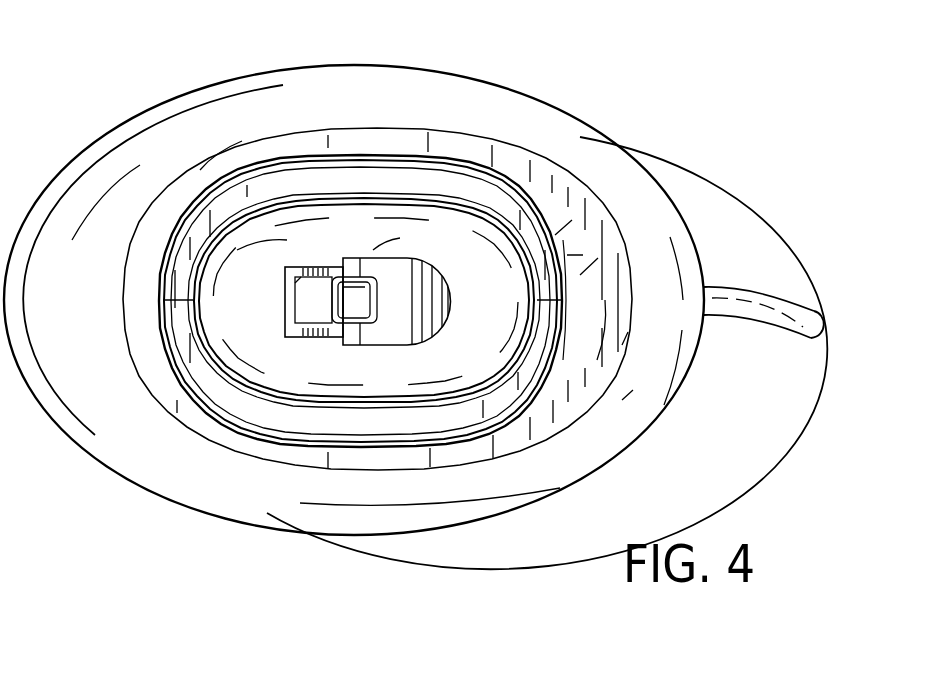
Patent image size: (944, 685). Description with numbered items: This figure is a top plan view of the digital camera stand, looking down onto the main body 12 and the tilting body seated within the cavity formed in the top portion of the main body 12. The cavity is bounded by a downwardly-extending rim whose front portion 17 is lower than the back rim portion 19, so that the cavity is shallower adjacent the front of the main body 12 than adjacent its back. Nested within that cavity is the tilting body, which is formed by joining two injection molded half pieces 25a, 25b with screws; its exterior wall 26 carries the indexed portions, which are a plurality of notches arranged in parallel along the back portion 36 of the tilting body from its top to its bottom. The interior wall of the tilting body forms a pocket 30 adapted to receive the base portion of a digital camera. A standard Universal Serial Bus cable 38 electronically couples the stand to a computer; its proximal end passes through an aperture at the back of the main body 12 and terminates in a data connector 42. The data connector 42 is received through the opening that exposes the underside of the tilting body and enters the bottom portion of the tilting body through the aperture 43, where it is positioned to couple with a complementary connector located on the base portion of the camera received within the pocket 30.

The main body 12 is at (486, 72).
The front portion of the rim 17 is at (162, 326).
The back rim portion 19 is at (583, 276).
The injection molded half piece 25a is at (264, 440).
The injection molded half piece 25b is at (353, 156).
The exterior wall 26 is at (233, 175).
The pocket 30 is at (240, 354).
The back portion of tilting body 36 is at (562, 357).
The USB cable 38 is at (770, 287).
The data connector 42 is at (363, 262).
The aperture 43 is at (400, 346).